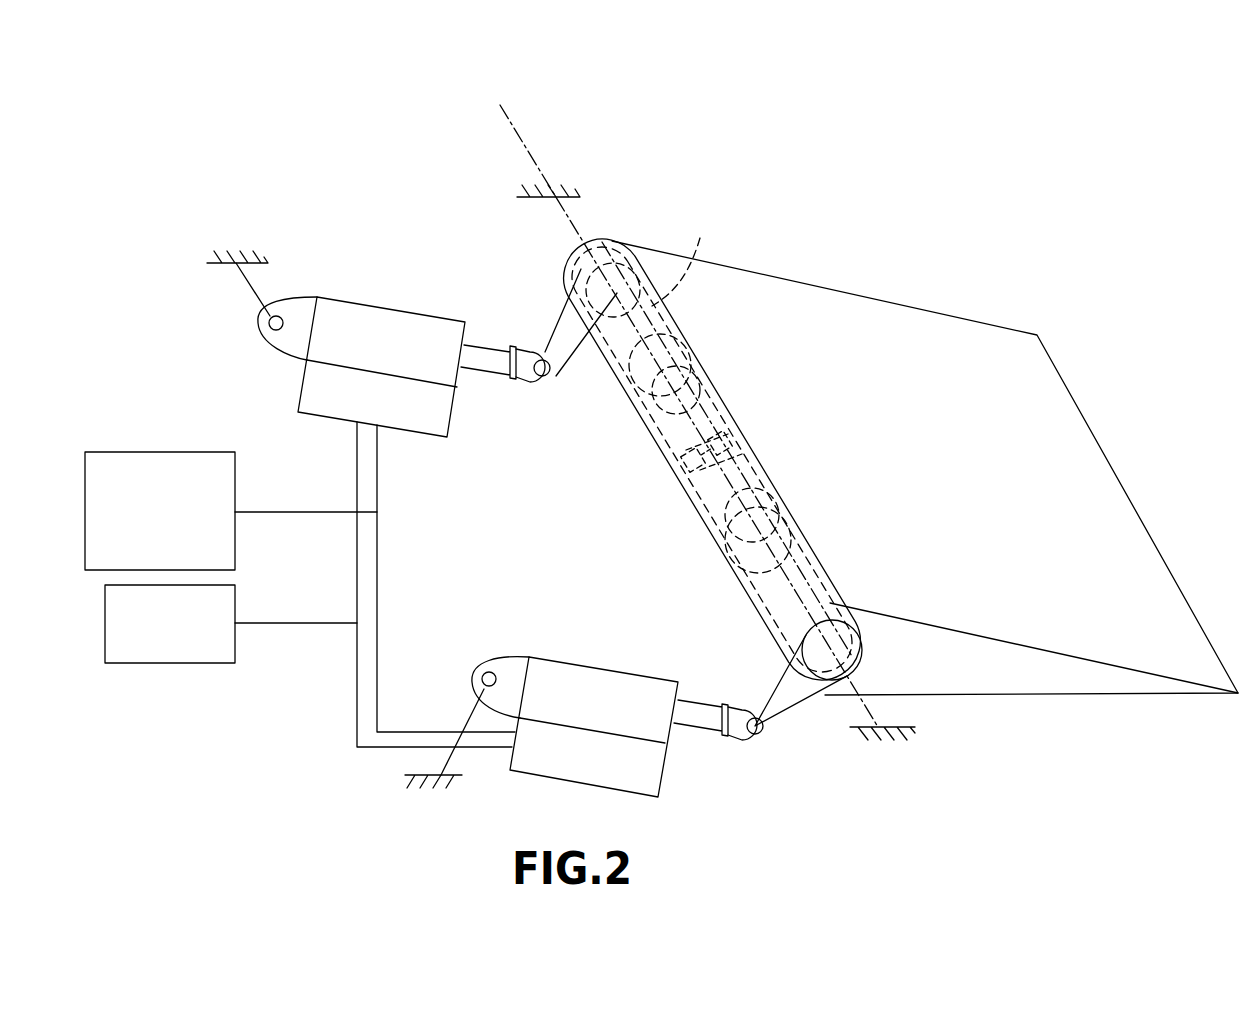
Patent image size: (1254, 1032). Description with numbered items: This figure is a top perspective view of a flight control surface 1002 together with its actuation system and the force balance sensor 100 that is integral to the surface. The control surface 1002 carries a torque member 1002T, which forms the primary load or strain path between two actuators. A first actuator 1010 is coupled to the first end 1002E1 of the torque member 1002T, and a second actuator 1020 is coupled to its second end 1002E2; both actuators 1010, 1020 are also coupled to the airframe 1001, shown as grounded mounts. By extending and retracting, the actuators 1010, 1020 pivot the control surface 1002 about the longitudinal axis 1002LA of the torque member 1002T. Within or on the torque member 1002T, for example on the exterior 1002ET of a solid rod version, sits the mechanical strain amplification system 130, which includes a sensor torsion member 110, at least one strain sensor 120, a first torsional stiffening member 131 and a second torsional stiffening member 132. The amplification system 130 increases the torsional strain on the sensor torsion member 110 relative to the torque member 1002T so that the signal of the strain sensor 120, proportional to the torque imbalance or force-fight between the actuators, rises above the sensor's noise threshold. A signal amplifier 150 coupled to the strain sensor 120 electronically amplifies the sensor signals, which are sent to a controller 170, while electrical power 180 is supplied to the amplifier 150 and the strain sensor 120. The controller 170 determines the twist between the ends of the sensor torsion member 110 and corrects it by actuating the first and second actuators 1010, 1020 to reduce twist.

The force balance sensor 100 is at (799, 459).
The sensor torsion member 110 is at (731, 410).
The strain sensor 120 is at (677, 470).
The mechanical strain amplification system 130 is at (810, 418).
The first torsional stiffening member 131 is at (693, 347).
The second torsional stiffening member 132 is at (782, 502).
The signal amplifier 150 is at (733, 433).
The controller 170 is at (152, 665).
The electrical power 180 is at (130, 452).
The airframe 1001 is at (220, 265).
The control surface 1002 is at (931, 307).
The longitudinal axis 1002LA is at (533, 90).
The first end 1002E1 is at (622, 268).
The second end 1002E2 is at (862, 655).
The torque member 1002T is at (708, 258).
The exterior 1002ET is at (832, 578).
The first actuator 1010 is at (347, 300).
The second actuator 1020 is at (560, 658).